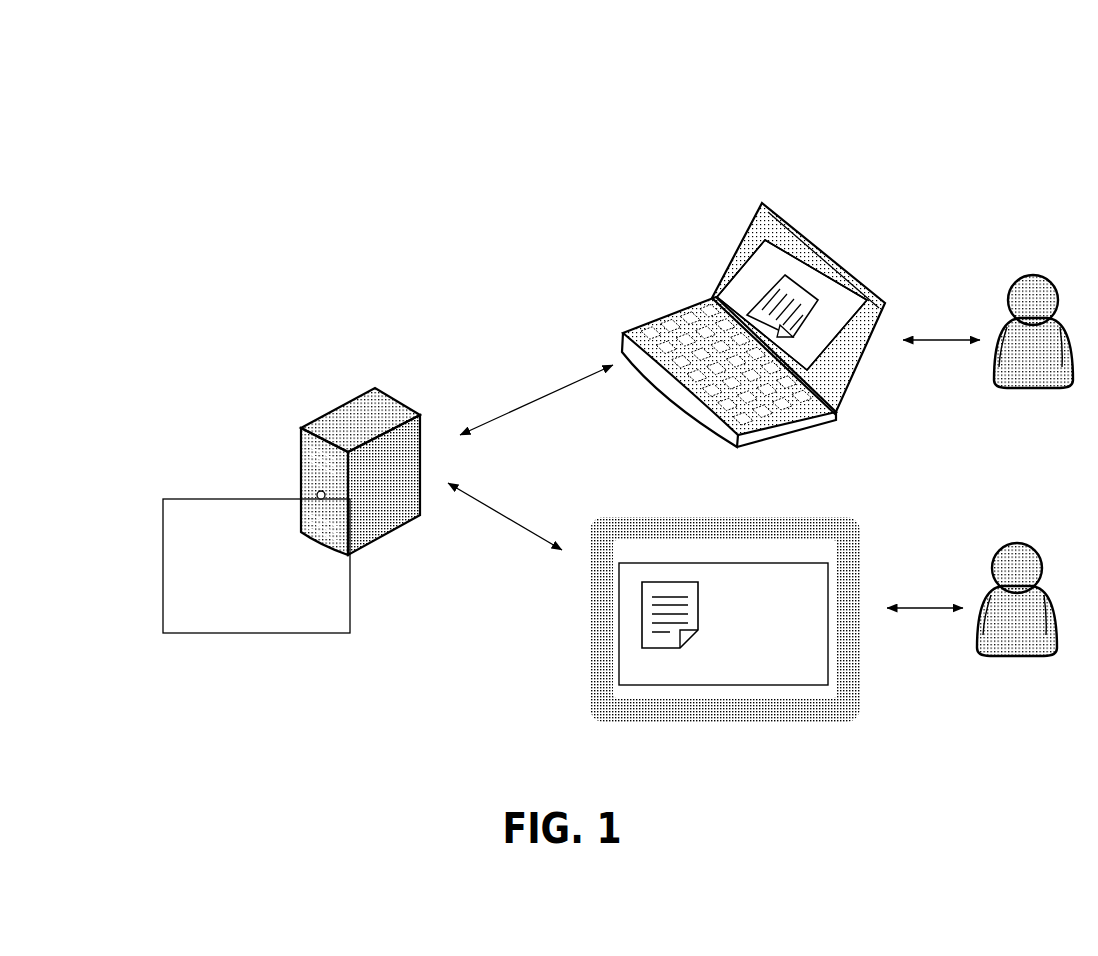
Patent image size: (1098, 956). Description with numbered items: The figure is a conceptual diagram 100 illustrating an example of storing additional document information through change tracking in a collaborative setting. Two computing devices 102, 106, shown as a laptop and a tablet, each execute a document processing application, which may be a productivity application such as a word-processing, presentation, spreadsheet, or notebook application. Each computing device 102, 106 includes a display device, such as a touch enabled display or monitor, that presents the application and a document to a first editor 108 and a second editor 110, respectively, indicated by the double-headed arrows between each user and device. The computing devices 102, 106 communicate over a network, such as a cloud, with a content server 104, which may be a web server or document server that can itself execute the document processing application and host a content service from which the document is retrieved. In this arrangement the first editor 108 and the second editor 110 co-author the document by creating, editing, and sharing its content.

The diagram 100 is at (860, 50).
The computing device 102 is at (762, 200).
The content server 104 is at (342, 388).
The computing device 106 is at (657, 515).
The first editor 108 is at (1032, 273).
The second editor 110 is at (1015, 542).